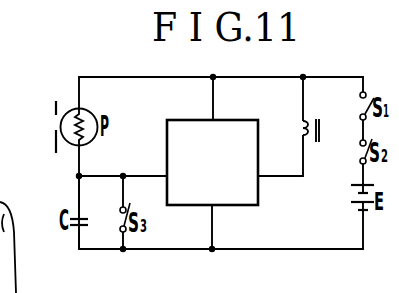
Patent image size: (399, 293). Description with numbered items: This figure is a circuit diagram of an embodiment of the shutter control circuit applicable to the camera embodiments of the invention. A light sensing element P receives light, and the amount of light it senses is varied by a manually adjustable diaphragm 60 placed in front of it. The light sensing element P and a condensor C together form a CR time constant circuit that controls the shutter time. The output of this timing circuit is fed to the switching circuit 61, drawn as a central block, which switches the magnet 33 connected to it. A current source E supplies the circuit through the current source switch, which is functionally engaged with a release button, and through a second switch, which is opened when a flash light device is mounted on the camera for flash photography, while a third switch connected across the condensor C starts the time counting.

The manually adjustable diaphragm 60 is at (55, 135).
The magnet 33 is at (311, 116).
The switching circuit 61 is at (240, 200).